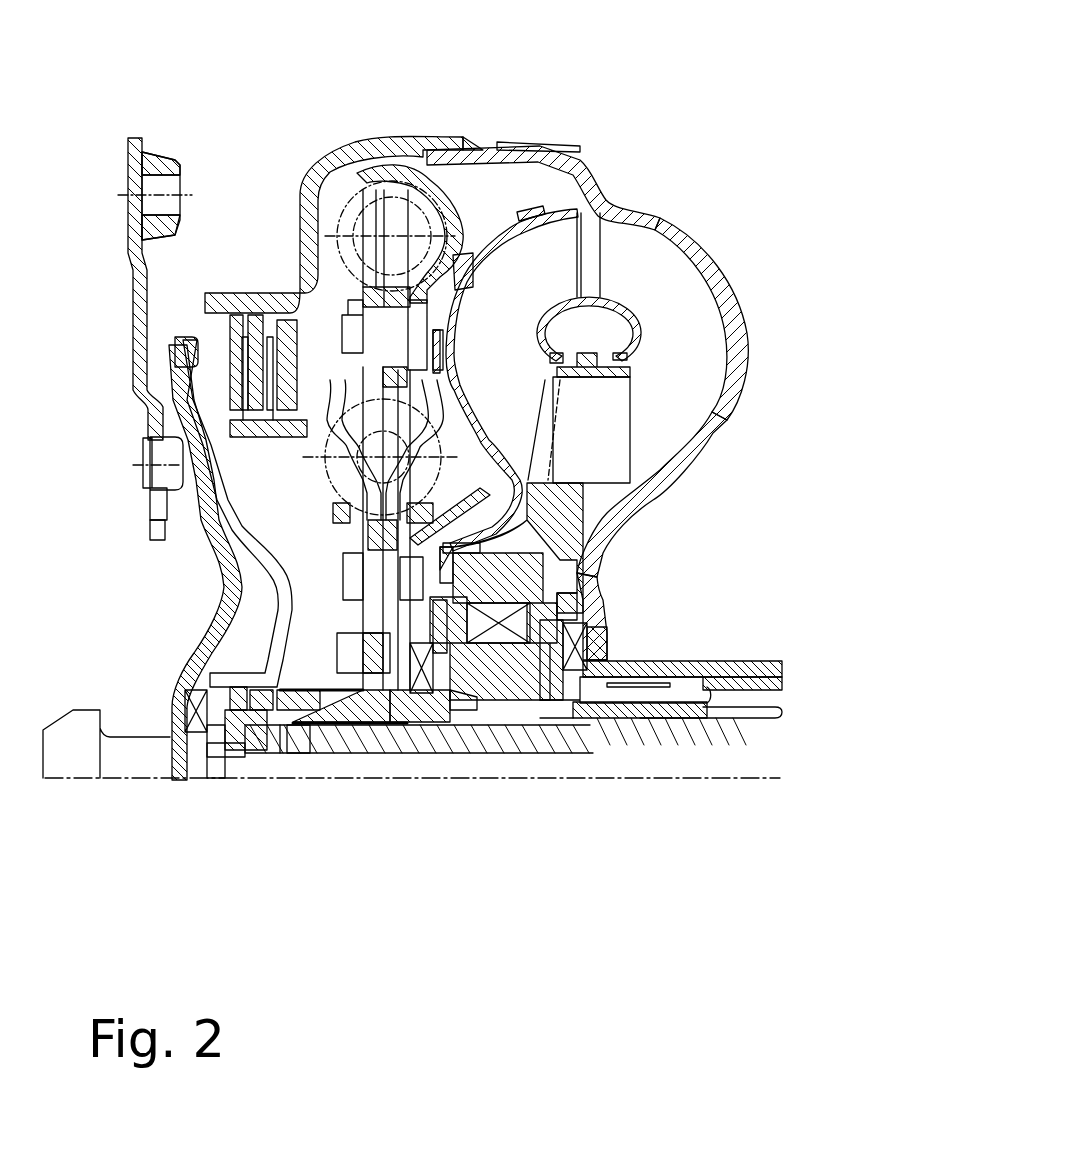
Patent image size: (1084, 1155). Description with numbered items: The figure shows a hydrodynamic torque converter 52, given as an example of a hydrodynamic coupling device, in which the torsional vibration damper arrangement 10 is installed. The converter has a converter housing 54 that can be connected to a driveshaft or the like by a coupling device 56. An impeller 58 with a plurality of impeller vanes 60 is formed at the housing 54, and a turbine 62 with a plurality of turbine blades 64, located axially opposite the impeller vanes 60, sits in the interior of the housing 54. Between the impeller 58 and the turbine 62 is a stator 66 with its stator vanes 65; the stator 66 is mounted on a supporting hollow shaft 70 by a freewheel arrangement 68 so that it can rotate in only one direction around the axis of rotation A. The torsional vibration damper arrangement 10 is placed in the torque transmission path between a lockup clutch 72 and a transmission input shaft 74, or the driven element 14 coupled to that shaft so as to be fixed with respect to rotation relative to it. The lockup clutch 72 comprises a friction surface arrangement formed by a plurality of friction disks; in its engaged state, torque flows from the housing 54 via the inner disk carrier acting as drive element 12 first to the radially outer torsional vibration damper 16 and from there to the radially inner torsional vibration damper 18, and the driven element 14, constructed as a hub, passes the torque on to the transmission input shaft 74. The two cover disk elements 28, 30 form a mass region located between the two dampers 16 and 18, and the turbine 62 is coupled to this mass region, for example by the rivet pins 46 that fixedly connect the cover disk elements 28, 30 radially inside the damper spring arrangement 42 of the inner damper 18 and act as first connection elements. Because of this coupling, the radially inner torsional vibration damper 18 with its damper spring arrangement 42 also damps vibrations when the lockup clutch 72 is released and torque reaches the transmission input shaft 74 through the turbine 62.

The torsional vibration damper arrangement 10 is at (478, 203).
The drive element 12 is at (148, 447).
The driven element 14 is at (365, 715).
The radially outer torsional vibration damper 16 is at (338, 205).
The radially inner torsional vibration damper 18 is at (300, 526).
The cover disk element 28 is at (348, 541).
The cover disk element 30 is at (413, 720).
The damper spring arrangement 42 is at (302, 478).
The rivet pins 46 is at (383, 573).
The hydrodynamic torque converter 52 is at (748, 257).
The converter housing 54 is at (393, 137).
The coupling device 56 is at (140, 283).
The impeller 58 is at (766, 338).
The impeller vanes 60 is at (667, 347).
The turbine 62 is at (571, 198).
The turbine blades 64 is at (480, 336).
The stator vanes 65 is at (608, 461).
The stator 66 is at (601, 510).
The freewheel arrangement 68 is at (564, 587).
The supporting hollow shaft 70 is at (750, 697).
The lockup clutch 72 is at (244, 290).
The transmission input shaft 74 is at (583, 748).
The axis of rotation A is at (776, 780).